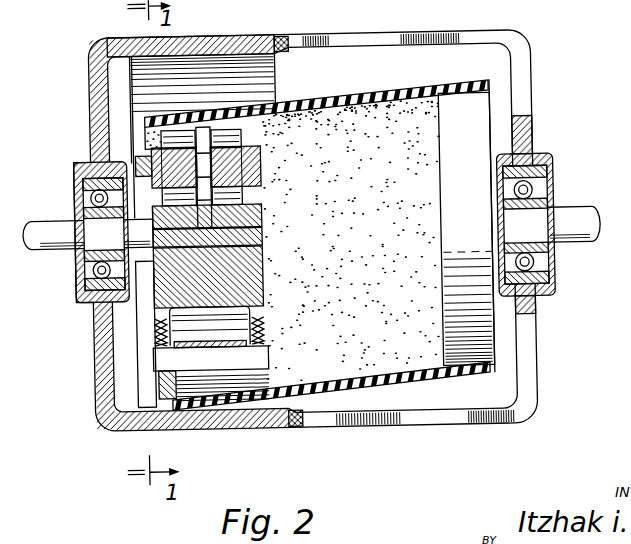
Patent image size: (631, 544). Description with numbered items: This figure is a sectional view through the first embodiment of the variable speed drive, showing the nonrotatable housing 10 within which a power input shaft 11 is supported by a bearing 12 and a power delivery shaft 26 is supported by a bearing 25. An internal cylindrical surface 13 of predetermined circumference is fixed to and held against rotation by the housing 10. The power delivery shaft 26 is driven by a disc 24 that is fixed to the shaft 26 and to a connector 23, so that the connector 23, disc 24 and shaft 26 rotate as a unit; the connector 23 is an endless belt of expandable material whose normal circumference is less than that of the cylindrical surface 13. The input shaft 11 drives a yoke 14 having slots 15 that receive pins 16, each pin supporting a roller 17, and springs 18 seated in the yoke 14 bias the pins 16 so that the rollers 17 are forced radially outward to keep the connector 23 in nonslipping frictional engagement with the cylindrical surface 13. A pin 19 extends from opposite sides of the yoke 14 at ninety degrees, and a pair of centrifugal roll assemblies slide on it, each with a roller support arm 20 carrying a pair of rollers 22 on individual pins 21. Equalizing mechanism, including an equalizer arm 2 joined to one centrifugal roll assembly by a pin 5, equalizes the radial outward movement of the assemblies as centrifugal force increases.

The equalizer arm 2 is at (119, 238).
The pin 5 is at (140, 169).
The housing 10 is at (461, 420).
The power input shaft 11 is at (53, 215).
The bearing 12 is at (92, 265).
The internal cylindrical surface 13 is at (265, 40).
The yoke 14 is at (252, 277).
The slots 15 is at (157, 372).
The pins 16 is at (268, 357).
The rollers 17 is at (250, 379).
The springs 18 is at (263, 322).
The pin 19 is at (200, 230).
The roller support arm 20 is at (267, 147).
The pins 21 is at (266, 171).
The rollers 22 is at (260, 131).
The connector 23 is at (375, 98).
The disc 24 is at (482, 120).
The bearing 25 is at (542, 264).
The power delivery shaft 26 is at (564, 217).